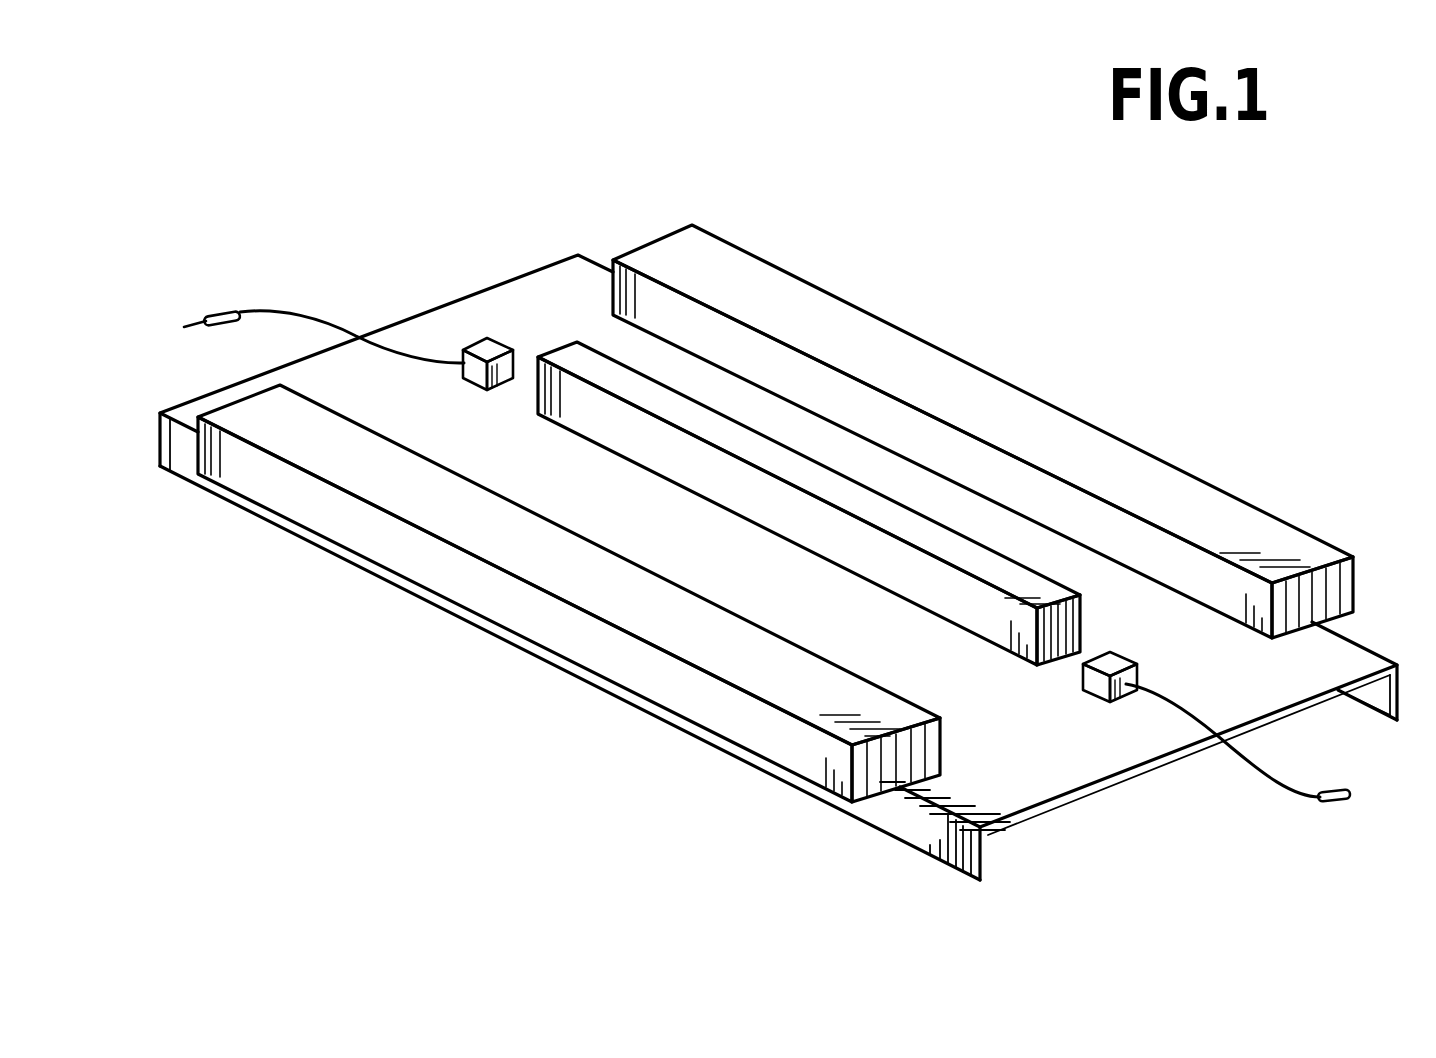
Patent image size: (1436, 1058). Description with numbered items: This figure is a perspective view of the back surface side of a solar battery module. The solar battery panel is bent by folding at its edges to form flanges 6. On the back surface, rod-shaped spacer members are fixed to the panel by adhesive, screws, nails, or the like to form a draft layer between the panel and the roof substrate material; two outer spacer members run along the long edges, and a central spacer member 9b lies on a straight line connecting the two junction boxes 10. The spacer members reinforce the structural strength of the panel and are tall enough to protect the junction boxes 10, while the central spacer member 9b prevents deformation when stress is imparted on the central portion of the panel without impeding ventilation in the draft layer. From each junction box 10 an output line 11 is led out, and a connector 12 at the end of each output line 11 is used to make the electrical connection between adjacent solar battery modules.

The flange 6 is at (905, 822).
The spacer member 9b is at (778, 460).
The junction box 10 is at (483, 343).
The output line 11 is at (260, 308).
The connector 12 is at (220, 307).